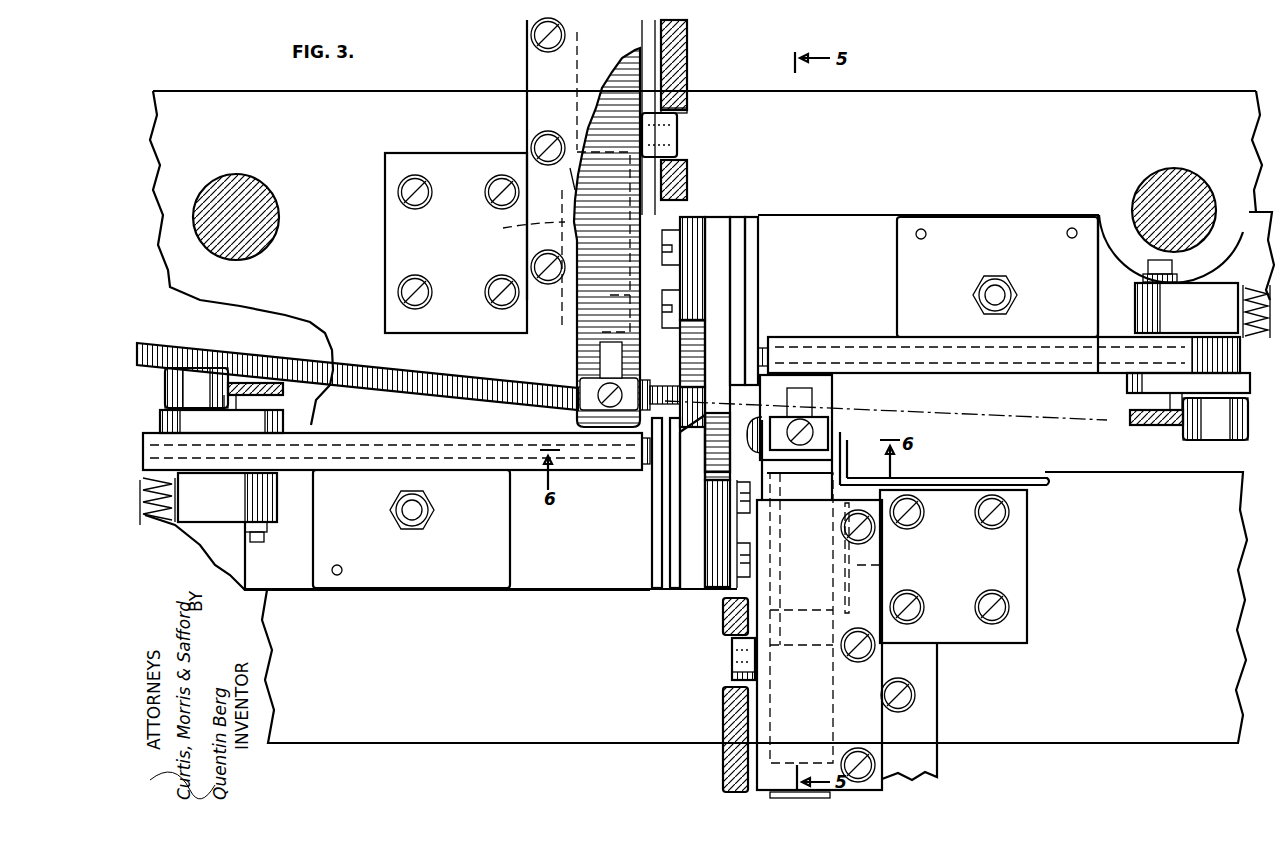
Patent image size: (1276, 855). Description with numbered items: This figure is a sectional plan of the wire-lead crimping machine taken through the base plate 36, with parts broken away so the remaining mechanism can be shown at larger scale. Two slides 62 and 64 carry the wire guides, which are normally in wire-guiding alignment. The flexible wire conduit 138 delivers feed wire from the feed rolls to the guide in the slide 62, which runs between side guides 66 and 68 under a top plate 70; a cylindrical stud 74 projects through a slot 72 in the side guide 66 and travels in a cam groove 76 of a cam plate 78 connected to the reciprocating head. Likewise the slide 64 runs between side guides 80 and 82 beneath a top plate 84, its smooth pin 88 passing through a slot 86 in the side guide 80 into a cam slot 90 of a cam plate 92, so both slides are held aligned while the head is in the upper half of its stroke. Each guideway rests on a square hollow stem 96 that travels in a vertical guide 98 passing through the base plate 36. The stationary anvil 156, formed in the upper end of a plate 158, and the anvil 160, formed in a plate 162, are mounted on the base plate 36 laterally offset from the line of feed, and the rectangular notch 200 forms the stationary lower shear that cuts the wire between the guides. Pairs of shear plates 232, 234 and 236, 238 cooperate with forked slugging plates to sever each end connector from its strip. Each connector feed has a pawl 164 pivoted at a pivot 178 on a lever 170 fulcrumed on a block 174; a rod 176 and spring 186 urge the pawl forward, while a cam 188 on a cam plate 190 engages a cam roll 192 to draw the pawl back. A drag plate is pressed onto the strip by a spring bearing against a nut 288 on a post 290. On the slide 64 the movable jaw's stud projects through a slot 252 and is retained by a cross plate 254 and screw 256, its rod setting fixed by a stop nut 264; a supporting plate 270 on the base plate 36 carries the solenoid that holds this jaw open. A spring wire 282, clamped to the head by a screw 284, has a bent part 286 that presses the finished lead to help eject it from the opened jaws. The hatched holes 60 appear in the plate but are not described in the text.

The base plate 36 is at (275, 100).
The guide post hole 60 is at (223, 195).
The slide 62 is at (607, 322).
The slide 64 is at (820, 498).
The side guide 66 is at (687, 195).
The side guide 68 is at (577, 178).
The top plate 70 is at (535, 52).
The slot 72 is at (642, 78).
The cylindrical stud 74 is at (668, 136).
The cam groove 76 is at (690, 118).
The cam plate 78 is at (688, 47).
The side guide 80 is at (735, 592).
The side guide 82 is at (832, 640).
The top plate 84 is at (868, 728).
The slot 86 is at (780, 742).
The cylindrical pin 88 is at (738, 652).
The cam slot 90 is at (740, 680).
The cam plate 92 is at (727, 753).
The square hollow stem 96 is at (695, 415).
The vertical guide 98 is at (420, 160).
The flexible wire conduit 138 is at (387, 374).
The anvil 156 is at (710, 455).
The plate 158 is at (714, 488).
The anvil 160 is at (690, 358).
The plate 162 is at (698, 328).
The pawl 164 is at (598, 470).
The lever 170 is at (285, 420).
The block 174 is at (852, 215).
The rod 176 is at (148, 526).
The pivot 178 is at (258, 540).
The spring 186 is at (178, 492).
The cam 188 is at (232, 404).
The cam plate 190 is at (270, 386).
The cam roll 192 is at (182, 383).
The rectangular notch 200 is at (692, 398).
The shear plate 232 is at (655, 516).
The shear plate 234 is at (672, 540).
The shear plate 236 is at (758, 228).
The shear plate 238 is at (737, 253).
The slot 252 is at (812, 393).
The cross plate 254 is at (835, 430).
The screw 256 is at (815, 437).
The stop nut 264 is at (760, 796).
The supporting plate 270 is at (935, 665).
The spring wire 282 is at (1045, 485).
The screw 284 is at (420, 586).
The part of spring wire 286 is at (845, 445).
The nut 288 is at (400, 520).
The post 290 is at (404, 506).